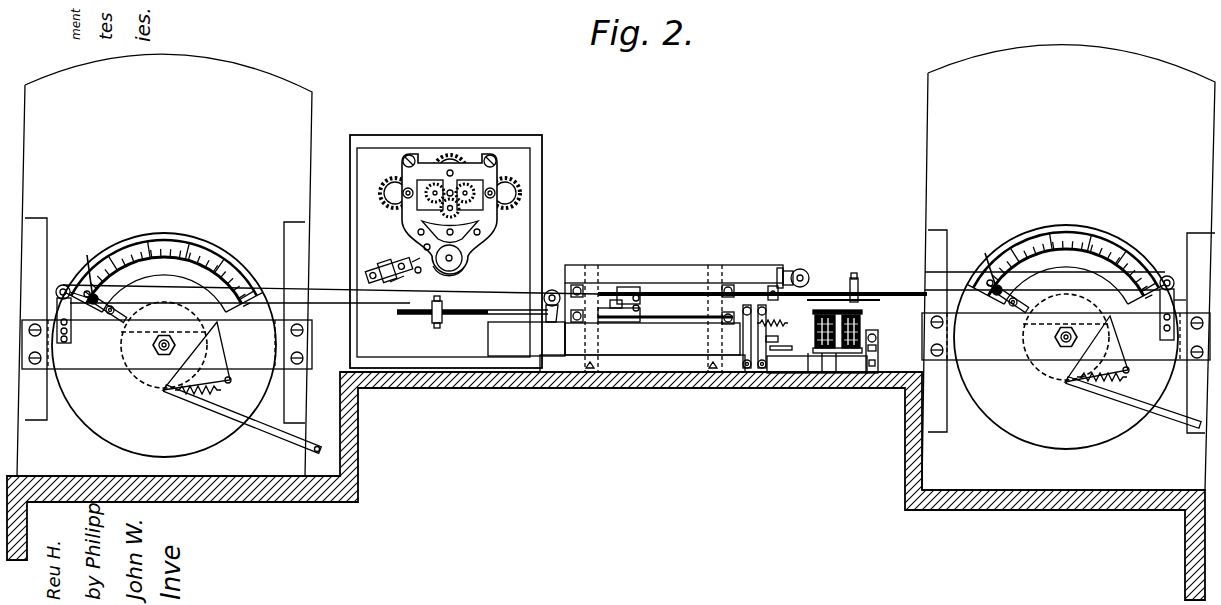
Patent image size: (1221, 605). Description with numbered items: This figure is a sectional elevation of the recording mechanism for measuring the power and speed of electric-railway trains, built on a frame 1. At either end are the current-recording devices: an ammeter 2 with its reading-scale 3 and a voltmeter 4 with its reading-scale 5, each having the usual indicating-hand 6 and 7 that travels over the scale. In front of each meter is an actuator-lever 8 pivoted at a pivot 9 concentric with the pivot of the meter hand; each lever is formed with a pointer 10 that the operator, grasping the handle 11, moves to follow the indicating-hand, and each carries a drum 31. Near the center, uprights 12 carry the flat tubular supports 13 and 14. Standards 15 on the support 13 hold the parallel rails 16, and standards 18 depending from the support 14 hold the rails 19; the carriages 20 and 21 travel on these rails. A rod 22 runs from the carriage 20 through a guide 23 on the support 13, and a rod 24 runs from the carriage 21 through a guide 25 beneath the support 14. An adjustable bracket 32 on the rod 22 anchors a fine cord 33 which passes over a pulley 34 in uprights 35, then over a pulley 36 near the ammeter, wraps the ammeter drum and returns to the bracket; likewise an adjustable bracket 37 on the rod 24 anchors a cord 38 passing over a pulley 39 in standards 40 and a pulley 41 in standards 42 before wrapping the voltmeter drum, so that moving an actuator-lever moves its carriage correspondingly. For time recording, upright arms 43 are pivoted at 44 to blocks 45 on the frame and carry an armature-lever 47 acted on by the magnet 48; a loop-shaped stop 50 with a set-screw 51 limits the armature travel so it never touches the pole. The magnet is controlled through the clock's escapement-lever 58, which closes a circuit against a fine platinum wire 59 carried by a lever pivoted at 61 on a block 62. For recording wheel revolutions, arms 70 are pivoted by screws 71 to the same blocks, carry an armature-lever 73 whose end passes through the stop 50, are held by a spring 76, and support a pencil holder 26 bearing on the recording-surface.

The frame 1 is at (655, 388).
The ammeter 2 is at (164, 265).
The reading-scale 3 is at (197, 260).
The voltmeter 4 is at (1068, 267).
The reading-scale 5 is at (1108, 244).
The indicating-hand 6 is at (86, 275).
The indicating-hand 7 is at (988, 270).
The actuator-lever 8 is at (245, 403).
The pivot 9 is at (152, 346).
The pointer 10 is at (108, 316).
The handle 11 is at (306, 452).
The upright 12 is at (596, 368).
The support 13 is at (652, 318).
The support 14 is at (674, 310).
The standard 15 is at (577, 322).
The rail 16 is at (665, 309).
The standard 18 is at (575, 285).
The rail 19 is at (690, 291).
The carriage 20 is at (630, 322).
The carriage 21 is at (628, 287).
The rod 22 is at (476, 316).
The guide 23 is at (526, 339).
The rod 24 is at (850, 302).
The guide 25 is at (781, 300).
The holder 26 is at (640, 300).
The drum 31 is at (615, 341).
The adjustable bracket 32 is at (432, 320).
The cord 33 is at (229, 377).
The pulley 34 is at (550, 289).
The upright 35 is at (553, 316).
The pulley 36 is at (62, 286).
The adjustable bracket 37 is at (858, 280).
The cord 38 is at (1126, 345).
The pulley 39 is at (796, 268).
The standard 40 is at (783, 270).
The pulley 41 is at (1168, 276).
The standard 42 is at (1190, 296).
The upright arm 43 is at (752, 334).
The pivot 44 is at (747, 372).
The block 45 is at (771, 366).
The armature-lever 47 is at (815, 376).
The magnet 48 is at (816, 312).
The stop 50 is at (878, 366).
The set-screw 51 is at (878, 341).
The escapement-lever 58 is at (412, 262).
The platinum wire 59 is at (416, 272).
The pivot 61 is at (399, 287).
The block 62 is at (384, 262).
The arm 70 is at (775, 338).
The screw 71 is at (762, 372).
The armature-lever 73 is at (783, 347).
The spring 76 is at (783, 325).